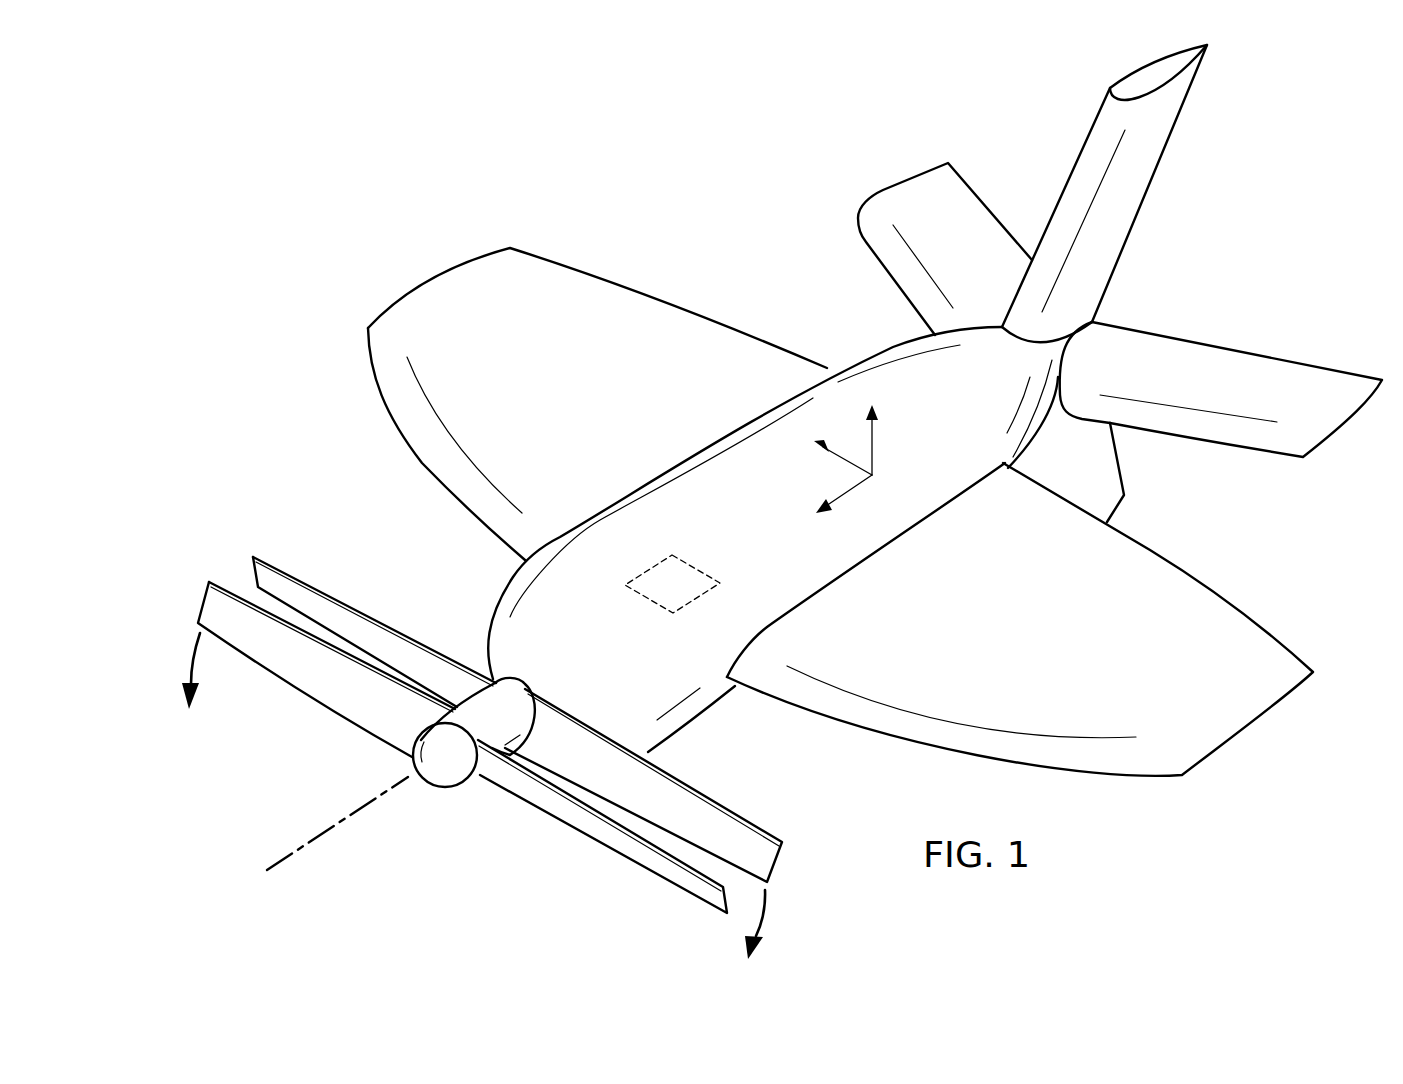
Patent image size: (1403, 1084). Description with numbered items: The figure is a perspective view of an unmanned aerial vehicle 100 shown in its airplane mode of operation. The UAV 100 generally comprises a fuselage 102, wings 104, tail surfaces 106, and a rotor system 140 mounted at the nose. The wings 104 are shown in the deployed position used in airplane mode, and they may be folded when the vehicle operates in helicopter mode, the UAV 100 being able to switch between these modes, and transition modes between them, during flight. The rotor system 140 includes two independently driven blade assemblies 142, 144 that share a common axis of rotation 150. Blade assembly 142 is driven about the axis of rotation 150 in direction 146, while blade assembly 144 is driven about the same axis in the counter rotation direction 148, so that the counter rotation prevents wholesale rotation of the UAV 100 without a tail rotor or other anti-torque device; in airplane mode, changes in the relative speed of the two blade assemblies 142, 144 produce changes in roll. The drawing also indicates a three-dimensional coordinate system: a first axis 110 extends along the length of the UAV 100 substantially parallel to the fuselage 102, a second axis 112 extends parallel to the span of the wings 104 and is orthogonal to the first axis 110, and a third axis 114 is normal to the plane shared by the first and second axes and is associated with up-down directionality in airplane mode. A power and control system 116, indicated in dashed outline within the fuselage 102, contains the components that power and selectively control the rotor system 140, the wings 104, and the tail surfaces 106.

The unmanned aerial vehicle 100 is at (436, 150).
The fuselage 102 is at (872, 353).
The wings 104 is at (631, 278).
The tail surfaces 106 is at (1176, 266).
The first axis 110 is at (848, 493).
The second axis 112 is at (845, 458).
The third axis 114 is at (875, 448).
The power and control system 116 is at (685, 560).
The rotor system 140 is at (441, 615).
The blade assembly 142 is at (623, 858).
The blade assembly 144 is at (718, 800).
The direction 146 is at (186, 655).
The direction 148 is at (767, 912).
The axis of rotation 150 is at (341, 825).